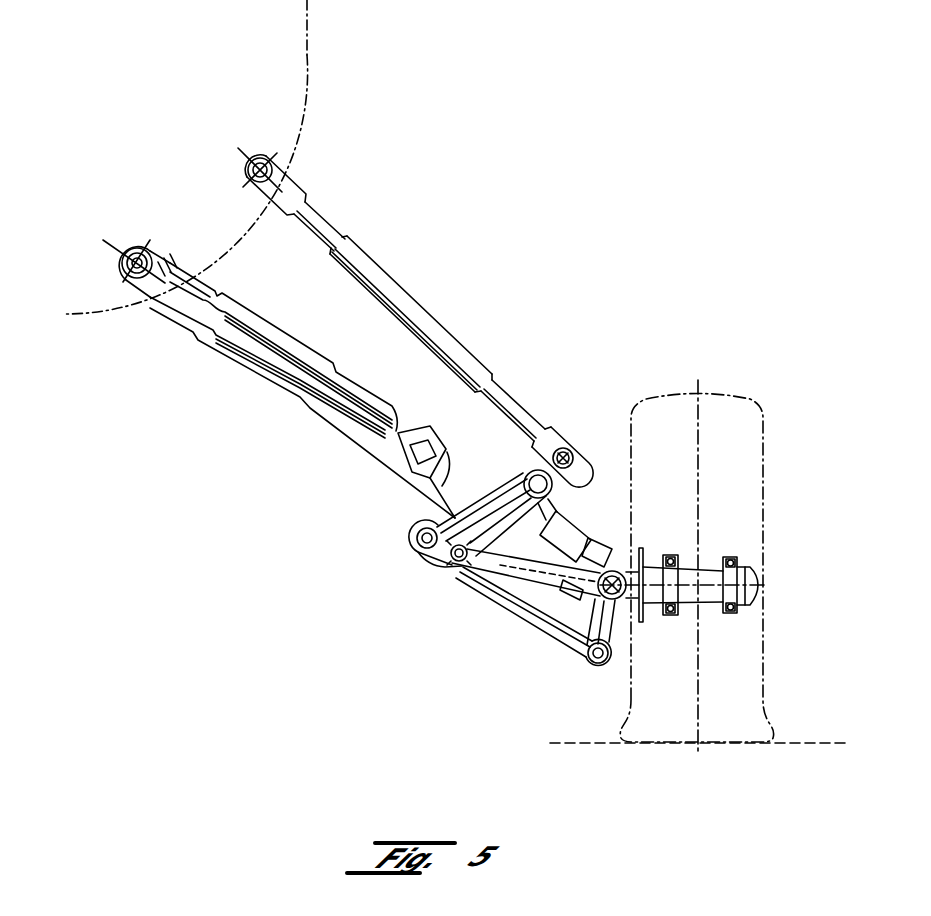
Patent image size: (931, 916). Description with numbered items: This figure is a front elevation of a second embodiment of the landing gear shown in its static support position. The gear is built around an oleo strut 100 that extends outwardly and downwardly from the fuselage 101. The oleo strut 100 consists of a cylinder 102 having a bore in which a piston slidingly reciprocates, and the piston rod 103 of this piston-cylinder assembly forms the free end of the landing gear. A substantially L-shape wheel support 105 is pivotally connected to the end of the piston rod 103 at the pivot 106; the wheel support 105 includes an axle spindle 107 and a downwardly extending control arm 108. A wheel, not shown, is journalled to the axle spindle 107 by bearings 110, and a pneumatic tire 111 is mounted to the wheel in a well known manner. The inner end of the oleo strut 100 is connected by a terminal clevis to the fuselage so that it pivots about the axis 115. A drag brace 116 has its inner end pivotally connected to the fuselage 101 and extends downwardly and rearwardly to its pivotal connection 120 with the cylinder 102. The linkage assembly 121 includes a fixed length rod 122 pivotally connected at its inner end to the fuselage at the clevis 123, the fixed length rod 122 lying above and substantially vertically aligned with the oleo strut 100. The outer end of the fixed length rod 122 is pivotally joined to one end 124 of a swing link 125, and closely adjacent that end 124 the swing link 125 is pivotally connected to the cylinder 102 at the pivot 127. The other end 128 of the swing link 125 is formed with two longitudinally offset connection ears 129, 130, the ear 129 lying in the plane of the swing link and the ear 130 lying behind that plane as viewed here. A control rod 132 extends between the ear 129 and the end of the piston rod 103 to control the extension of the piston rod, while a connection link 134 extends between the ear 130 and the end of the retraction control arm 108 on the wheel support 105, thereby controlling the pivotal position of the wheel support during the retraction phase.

The oleo strut 100 is at (359, 462).
The fuselage 101 is at (309, 57).
The cylinder 102 is at (353, 438).
The piston rod 103 is at (575, 535).
The wheel support 105 is at (625, 657).
The pivotal connection 106 is at (621, 572).
The axle spindle 107 is at (708, 598).
The control arm 108 is at (612, 614).
The bearings 110 is at (740, 560).
The pneumatic tire 111 is at (753, 402).
The axis 115 is at (122, 263).
The drag brace 116 is at (257, 347).
The pivotal connection 120 is at (417, 445).
The linkage assembly 121 is at (436, 585).
The fixed length rod 122 is at (387, 278).
The clevis 123 is at (262, 158).
The end of swing link 124 is at (582, 472).
The swing link 125 is at (498, 461).
The pivotal connection 127 is at (508, 526).
The other end of swing link 128 is at (450, 513).
The connection ear 129 is at (463, 573).
The connection ear 130 is at (425, 547).
The control rod 132 is at (530, 570).
The connection link 134 is at (550, 633).